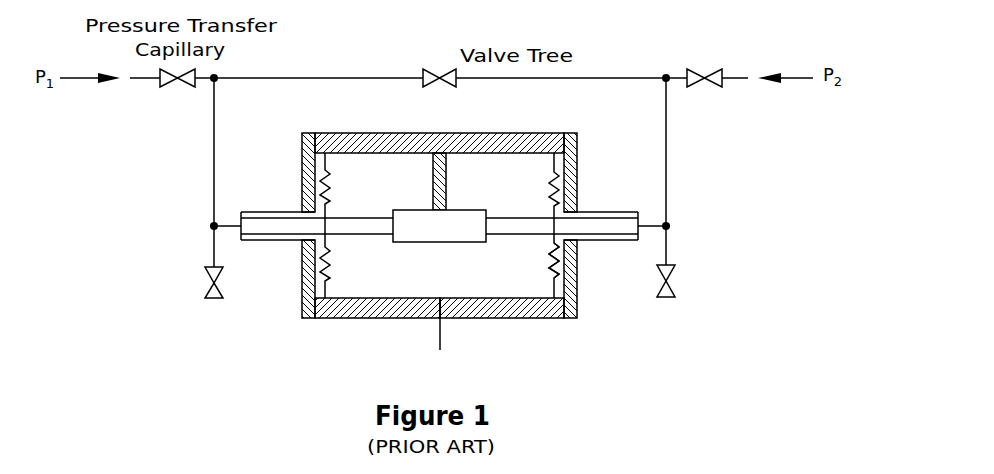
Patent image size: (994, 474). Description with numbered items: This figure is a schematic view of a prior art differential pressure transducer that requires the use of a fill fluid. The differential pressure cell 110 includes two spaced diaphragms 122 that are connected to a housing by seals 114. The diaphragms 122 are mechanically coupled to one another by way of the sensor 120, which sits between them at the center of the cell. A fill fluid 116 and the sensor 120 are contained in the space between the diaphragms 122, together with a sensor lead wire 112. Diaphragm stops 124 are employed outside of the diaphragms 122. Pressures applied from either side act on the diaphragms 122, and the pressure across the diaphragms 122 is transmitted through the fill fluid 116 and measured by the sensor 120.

The differential pressure cell 110 is at (280, 312).
The sensor lead wire 112 is at (440, 350).
The seals 114 is at (440, 319).
The fill fluid 116 is at (325, 268).
The sensor 120 is at (412, 210).
The diaphragms 122 is at (325, 190).
The diaphragm stops 124 is at (557, 255).